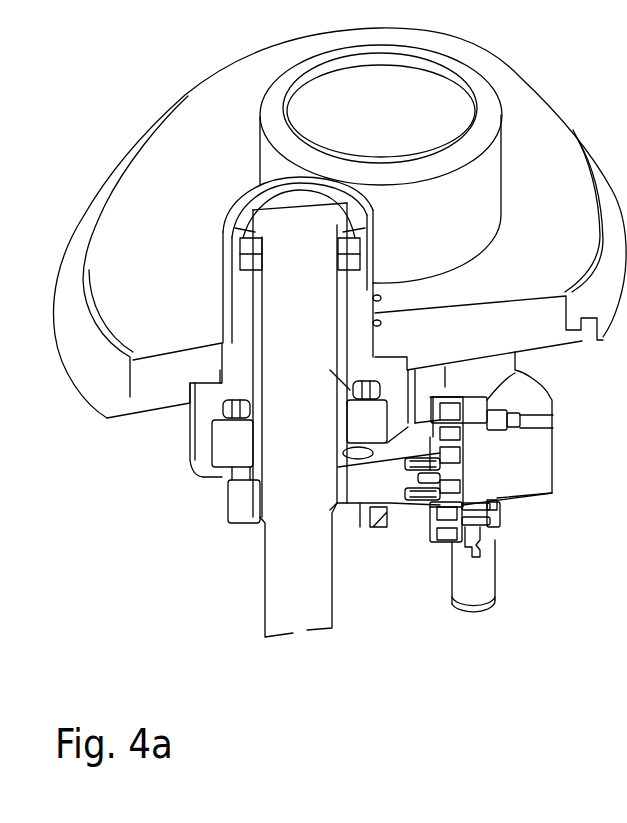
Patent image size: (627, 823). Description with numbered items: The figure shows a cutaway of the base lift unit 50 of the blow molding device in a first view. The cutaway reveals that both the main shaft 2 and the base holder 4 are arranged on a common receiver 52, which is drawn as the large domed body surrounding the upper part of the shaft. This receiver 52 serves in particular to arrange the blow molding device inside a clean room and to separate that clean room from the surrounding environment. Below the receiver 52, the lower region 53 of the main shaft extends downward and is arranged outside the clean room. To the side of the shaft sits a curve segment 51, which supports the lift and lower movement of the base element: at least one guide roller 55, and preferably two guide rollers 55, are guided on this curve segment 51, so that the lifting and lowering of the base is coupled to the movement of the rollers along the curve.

The base lift unit 50 is at (82, 103).
The receiver 52 is at (150, 237).
The main shaft 2 is at (293, 220).
The base holder 4 is at (430, 93).
The lower region of the main shaft 53 is at (283, 573).
The curve segment 51 is at (463, 460).
The guide roller 55 is at (453, 421).